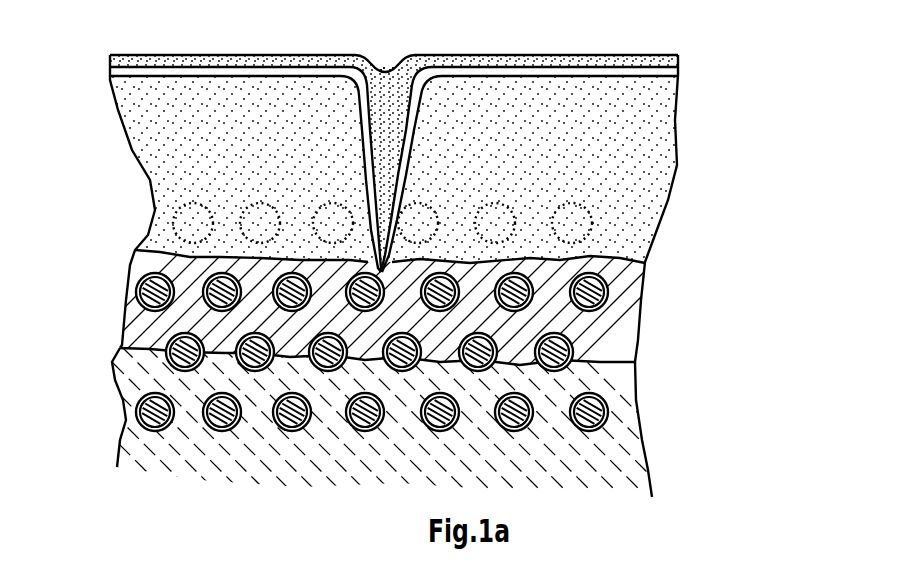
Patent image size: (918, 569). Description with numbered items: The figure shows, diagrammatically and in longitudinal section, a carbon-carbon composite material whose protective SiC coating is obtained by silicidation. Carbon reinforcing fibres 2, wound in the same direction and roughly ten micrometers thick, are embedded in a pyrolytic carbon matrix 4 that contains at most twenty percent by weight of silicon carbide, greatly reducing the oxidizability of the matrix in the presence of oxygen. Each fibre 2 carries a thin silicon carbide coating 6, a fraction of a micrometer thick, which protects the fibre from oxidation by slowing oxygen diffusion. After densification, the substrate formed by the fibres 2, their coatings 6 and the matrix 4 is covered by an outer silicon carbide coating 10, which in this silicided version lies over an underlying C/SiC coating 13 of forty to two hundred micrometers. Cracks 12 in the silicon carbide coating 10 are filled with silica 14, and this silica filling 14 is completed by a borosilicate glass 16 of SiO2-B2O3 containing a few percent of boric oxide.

The carbon reinforcing fibres 2 is at (311, 427).
The pyrolytic carbon matrix 4 is at (630, 400).
The silicon carbide coating 6 is at (262, 205).
The silicon carbide coating 10 is at (150, 107).
The cracks 12 is at (412, 130).
The C/SiC coating 13 is at (630, 290).
The silica 14 is at (503, 70).
The borosilicate glass 16 is at (248, 60).